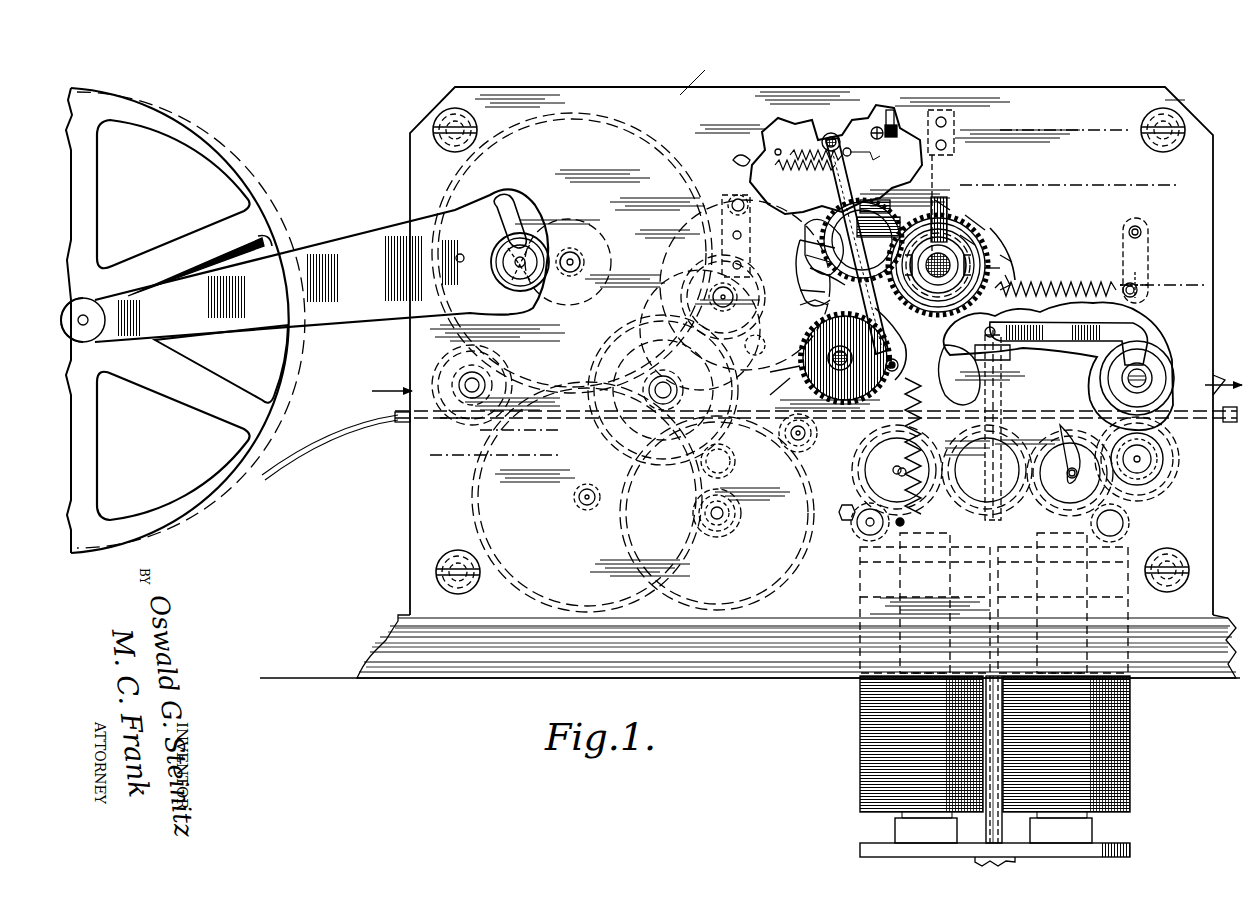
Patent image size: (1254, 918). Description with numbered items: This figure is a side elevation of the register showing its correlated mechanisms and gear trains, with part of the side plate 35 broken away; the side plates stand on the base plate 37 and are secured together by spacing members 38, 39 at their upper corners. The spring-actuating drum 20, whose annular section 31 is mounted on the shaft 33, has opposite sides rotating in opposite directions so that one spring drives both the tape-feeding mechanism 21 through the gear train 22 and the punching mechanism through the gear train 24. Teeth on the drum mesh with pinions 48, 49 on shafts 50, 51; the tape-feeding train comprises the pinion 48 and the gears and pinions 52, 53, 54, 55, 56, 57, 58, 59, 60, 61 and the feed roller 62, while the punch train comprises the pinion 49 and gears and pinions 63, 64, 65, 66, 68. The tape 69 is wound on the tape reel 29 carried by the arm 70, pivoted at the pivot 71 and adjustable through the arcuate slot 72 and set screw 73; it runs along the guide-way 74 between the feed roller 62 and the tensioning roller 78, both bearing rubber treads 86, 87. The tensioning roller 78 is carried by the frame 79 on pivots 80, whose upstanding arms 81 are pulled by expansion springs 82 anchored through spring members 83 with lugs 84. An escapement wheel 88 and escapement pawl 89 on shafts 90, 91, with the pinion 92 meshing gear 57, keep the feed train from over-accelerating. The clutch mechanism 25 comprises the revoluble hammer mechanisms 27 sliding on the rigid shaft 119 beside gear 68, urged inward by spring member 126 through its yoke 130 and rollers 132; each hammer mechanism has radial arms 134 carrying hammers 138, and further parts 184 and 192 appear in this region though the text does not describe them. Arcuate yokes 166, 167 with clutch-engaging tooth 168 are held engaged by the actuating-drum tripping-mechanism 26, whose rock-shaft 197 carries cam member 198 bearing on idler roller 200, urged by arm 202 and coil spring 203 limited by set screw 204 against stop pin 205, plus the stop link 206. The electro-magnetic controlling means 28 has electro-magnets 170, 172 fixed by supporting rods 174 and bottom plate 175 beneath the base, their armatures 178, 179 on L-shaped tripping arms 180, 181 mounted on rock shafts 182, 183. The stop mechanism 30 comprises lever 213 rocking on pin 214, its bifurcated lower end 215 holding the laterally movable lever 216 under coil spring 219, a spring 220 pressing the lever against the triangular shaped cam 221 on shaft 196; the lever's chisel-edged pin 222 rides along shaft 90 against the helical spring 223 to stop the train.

The spring-actuating drum 20 is at (437, 178).
The tape-feeding mechanism 21 is at (1150, 340).
The gear train 22 is at (718, 461).
The gear train 24 is at (757, 346).
The clutch mechanism 25 is at (985, 235).
The actuating-drum tripping-mechanism 26 is at (948, 245).
The revoluble hammer mechanisms 27 is at (960, 375).
The electro-magnetic controlling means 28 is at (1138, 734).
The tape reel 29 is at (250, 494).
The stop mechanism 30 is at (833, 132).
The annular section 31 is at (568, 239).
The shaft 33 is at (569, 272).
The side plate 35 is at (1115, 161).
The base plate 37 is at (756, 667).
The spacing member 38 is at (446, 120).
The spacing member 39 is at (1183, 125).
The pinion 48 is at (390, 372).
The pinion 49 is at (663, 390).
The shaft 50 is at (470, 395).
The shaft 51 is at (660, 398).
The gear 52 is at (430, 372).
The gear 53 is at (476, 522).
The pinion 54 is at (762, 549).
The gear 55 is at (805, 567).
The pinion 56 is at (790, 448).
The gear 57 is at (840, 520).
The gear 58 is at (870, 515).
The pinion 59 is at (866, 530).
The gear 60 is at (1015, 440).
The pinion 61 is at (1140, 504).
The feed roller 62 is at (1170, 482).
The gear 63 is at (700, 330).
The pinion 64 is at (732, 300).
The gear 65 is at (688, 260).
The pinion 66 is at (818, 283).
The gear 68 is at (1010, 238).
The tape 69 is at (366, 426).
The arm 70 is at (304, 265).
The pivot 71 is at (460, 254).
The arcuate slot 72 is at (512, 215).
The set screw 73 is at (525, 288).
The guide-way 74 is at (1228, 424).
The tensioning roller 78 is at (1190, 375).
The frame 79 is at (1066, 328).
The pivot 80 is at (1075, 279).
The upstanding arm 81 is at (1028, 268).
The expansion spring 82 is at (1122, 287).
The spring member 83 is at (1148, 250).
The lug 84 is at (1140, 288).
The rubber tread 86 is at (1158, 360).
The rubber tread 87 is at (748, 208).
The escapement wheel 88 is at (891, 344).
The escapement pawl 89 is at (925, 390).
The shaft 90 is at (777, 397).
The shaft 91 is at (987, 462).
The pinion 92 is at (799, 314).
The rigid shaft 119 is at (1000, 262).
The spring member 126 is at (990, 228).
The yoke 130 is at (970, 240).
The rollers 132 is at (850, 279).
The radially arranged arm 134 is at (1008, 425).
The hammer 138 is at (993, 371).
The arcuate yoke 166 is at (1050, 245).
The arcuate yoke 167 is at (728, 278).
The clutch-engaging tooth 168 is at (945, 205).
The electro-magnet 170 is at (868, 726).
The electro-magnet 172 is at (1120, 753).
The supporting rod 174 is at (988, 757).
The bottom plate 175 is at (1130, 850).
The armature 178 is at (925, 601).
The armature 179 is at (1063, 601).
The L-shaped tripping arm 180 is at (932, 500).
The L-shaped tripping arm 181 is at (1060, 500).
The rock shaft 182 is at (877, 530).
The rock shaft 183 is at (1120, 528).
The pivot 184 is at (862, 309).
The disc 192 is at (938, 271).
The shaft 196 is at (803, 244).
The rock-shaft 197 is at (950, 190).
The cam member 198 is at (909, 116).
The idler roller 200 is at (957, 137).
The arm 202 is at (950, 125).
The coil spring 203 is at (800, 140).
The set screw 204 is at (925, 108).
The stop pin 205 is at (878, 126).
The stop link 206 is at (880, 207).
The lever 213 is at (861, 149).
The pin 214 is at (823, 142).
The bifurcated lower end 215 is at (799, 267).
The laterally movable lever 216 is at (796, 302).
The coil spring 219 is at (798, 149).
The spring 220 is at (748, 150).
The triangular shaped cam 221 is at (738, 236).
The pin 222 is at (845, 358).
The helical spring 223 is at (772, 371).